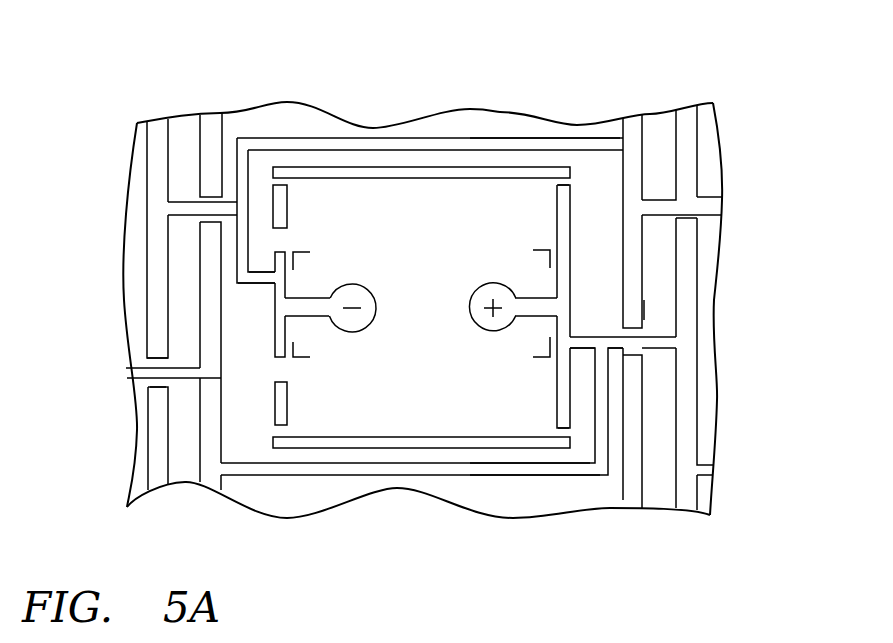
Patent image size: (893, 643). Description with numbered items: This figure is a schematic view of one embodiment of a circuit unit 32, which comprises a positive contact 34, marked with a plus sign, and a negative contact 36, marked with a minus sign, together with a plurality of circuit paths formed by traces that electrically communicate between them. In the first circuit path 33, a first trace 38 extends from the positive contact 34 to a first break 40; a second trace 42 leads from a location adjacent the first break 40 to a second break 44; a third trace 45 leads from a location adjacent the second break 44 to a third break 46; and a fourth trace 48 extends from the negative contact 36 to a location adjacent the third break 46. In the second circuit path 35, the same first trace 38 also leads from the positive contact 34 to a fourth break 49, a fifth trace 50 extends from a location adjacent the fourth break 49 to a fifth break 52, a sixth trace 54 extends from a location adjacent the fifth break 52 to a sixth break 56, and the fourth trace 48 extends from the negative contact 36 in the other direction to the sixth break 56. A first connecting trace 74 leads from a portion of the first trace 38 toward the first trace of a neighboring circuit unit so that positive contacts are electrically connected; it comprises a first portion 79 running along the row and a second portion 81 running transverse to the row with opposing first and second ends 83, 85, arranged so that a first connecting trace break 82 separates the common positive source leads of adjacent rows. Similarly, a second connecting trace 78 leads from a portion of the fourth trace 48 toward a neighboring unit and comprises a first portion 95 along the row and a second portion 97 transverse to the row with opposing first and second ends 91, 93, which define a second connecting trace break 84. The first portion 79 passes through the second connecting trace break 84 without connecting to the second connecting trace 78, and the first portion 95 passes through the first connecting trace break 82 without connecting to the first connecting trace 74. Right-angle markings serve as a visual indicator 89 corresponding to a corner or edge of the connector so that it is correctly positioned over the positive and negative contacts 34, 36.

The circuit unit 32 is at (697, 48).
The first circuit path 33 is at (452, 140).
The positive contact 34 is at (493, 318).
The second circuit path 35 is at (418, 473).
The negative contact 36 is at (345, 295).
The first trace 38 is at (563, 260).
The first break 40 is at (594, 173).
The second trace 42 is at (363, 177).
The second break 44 is at (202, 207).
The third trace 45 is at (280, 210).
The third break 46 is at (268, 262).
The fourth trace 48 is at (280, 330).
The fourth break 49 is at (595, 425).
The fifth trace 50 is at (343, 447).
The fifth break 52 is at (280, 410).
The sixth trace 54 is at (205, 373).
The sixth break 56 is at (280, 372).
The first connecting trace 74 is at (495, 470).
The second connecting trace 78 is at (487, 142).
The first portion 79 is at (650, 340).
The second portion 81 is at (683, 130).
The first connecting trace break 82 is at (718, 208).
The first end 83 is at (688, 226).
The second connecting trace break 84 is at (130, 362).
The second end 85 is at (712, 197).
The visual indicator 89 is at (307, 248).
The first end 91 is at (157, 388).
The second end 93 is at (153, 356).
The first portion 95 is at (280, 243).
The second portion 97 is at (157, 260).